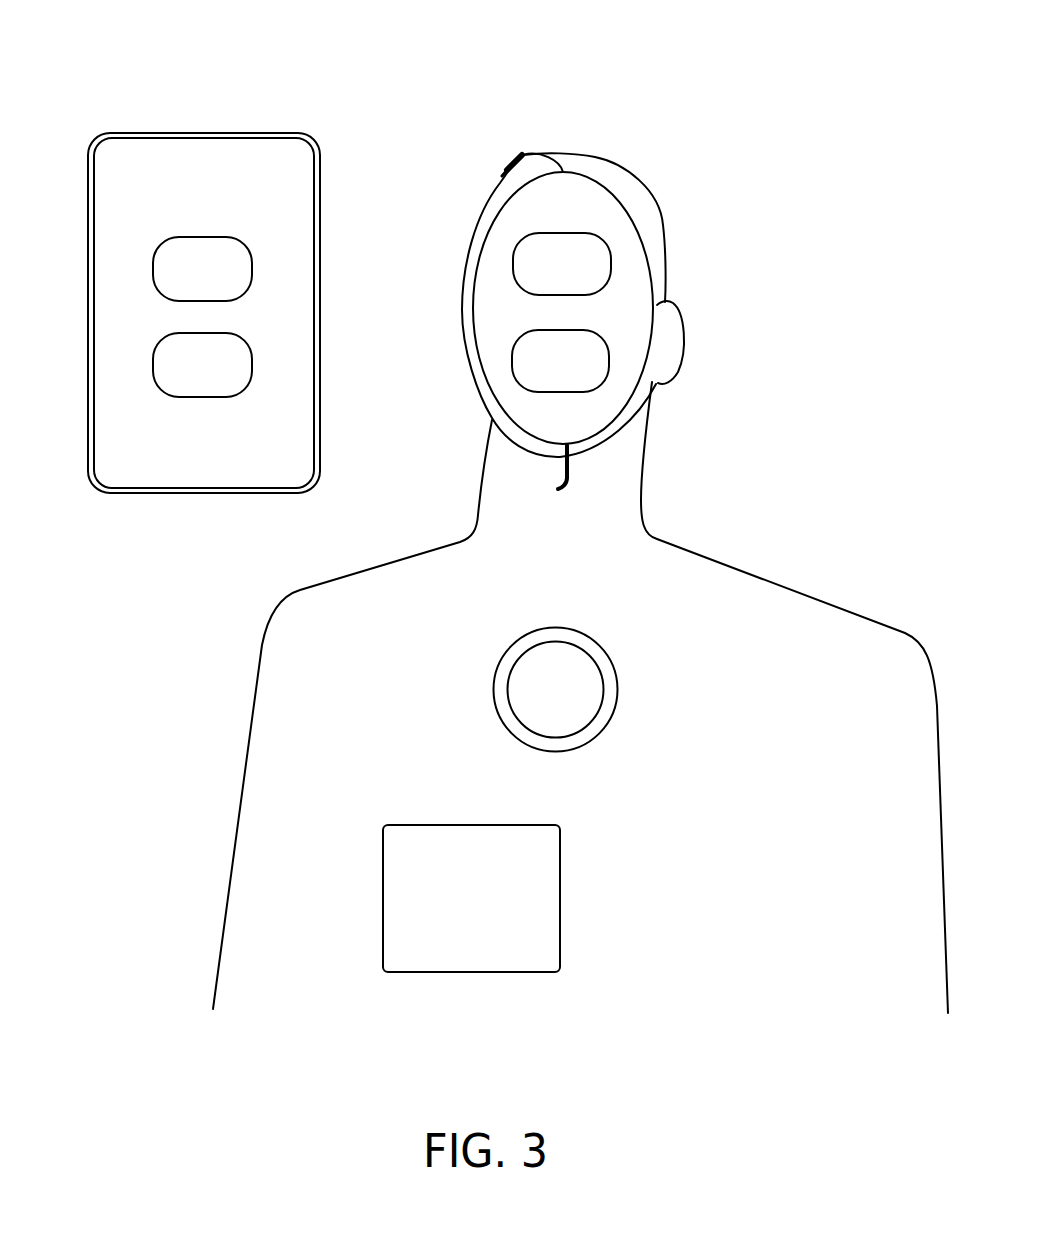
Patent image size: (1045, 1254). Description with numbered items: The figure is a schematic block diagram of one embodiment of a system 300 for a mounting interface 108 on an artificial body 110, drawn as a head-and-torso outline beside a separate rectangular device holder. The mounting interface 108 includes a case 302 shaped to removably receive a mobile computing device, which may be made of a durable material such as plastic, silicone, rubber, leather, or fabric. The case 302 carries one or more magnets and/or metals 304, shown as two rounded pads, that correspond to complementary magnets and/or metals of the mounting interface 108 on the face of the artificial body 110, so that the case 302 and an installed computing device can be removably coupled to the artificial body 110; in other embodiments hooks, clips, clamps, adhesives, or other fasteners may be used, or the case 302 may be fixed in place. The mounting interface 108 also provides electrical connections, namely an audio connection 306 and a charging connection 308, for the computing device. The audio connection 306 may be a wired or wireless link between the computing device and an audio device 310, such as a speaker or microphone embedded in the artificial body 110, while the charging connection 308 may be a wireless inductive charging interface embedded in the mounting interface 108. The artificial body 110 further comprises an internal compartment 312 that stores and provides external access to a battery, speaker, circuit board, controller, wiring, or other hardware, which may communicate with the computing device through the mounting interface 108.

The system 300 is at (90, 46).
The case 302 is at (95, 168).
The magnets and/or metals 304 is at (168, 253).
The audio connection 306 is at (512, 163).
The mounting interface 108 is at (582, 238).
The artificial body 110 is at (665, 233).
The charging connection 308 is at (557, 487).
The audio device 310 is at (510, 646).
The compartment 312 is at (386, 829).